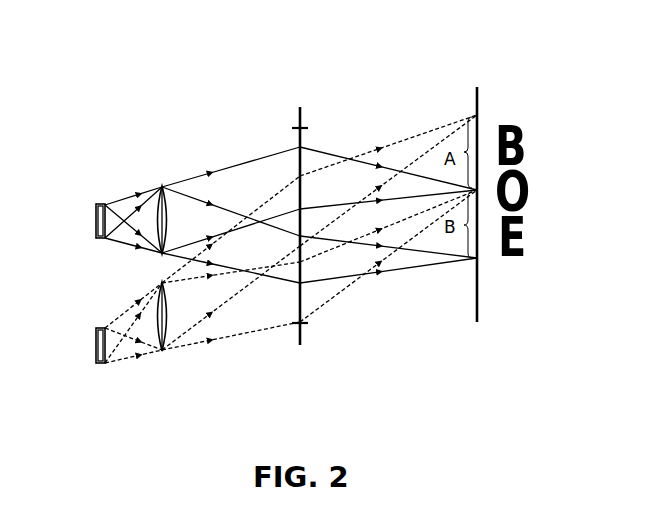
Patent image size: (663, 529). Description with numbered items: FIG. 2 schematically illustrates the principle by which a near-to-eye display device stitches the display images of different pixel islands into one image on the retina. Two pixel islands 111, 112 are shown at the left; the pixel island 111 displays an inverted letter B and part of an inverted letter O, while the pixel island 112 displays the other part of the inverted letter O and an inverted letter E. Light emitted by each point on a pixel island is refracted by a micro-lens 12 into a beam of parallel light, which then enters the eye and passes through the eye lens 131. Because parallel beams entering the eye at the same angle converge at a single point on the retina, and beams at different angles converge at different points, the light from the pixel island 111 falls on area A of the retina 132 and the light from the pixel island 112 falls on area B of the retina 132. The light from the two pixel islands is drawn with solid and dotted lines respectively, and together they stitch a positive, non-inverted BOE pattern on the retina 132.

The pixel island 111 is at (100, 365).
The pixel island 112 is at (100, 203).
The micro-lens 12 is at (162, 185).
The eye lens 131 is at (300, 108).
The retina 132 is at (477, 87).